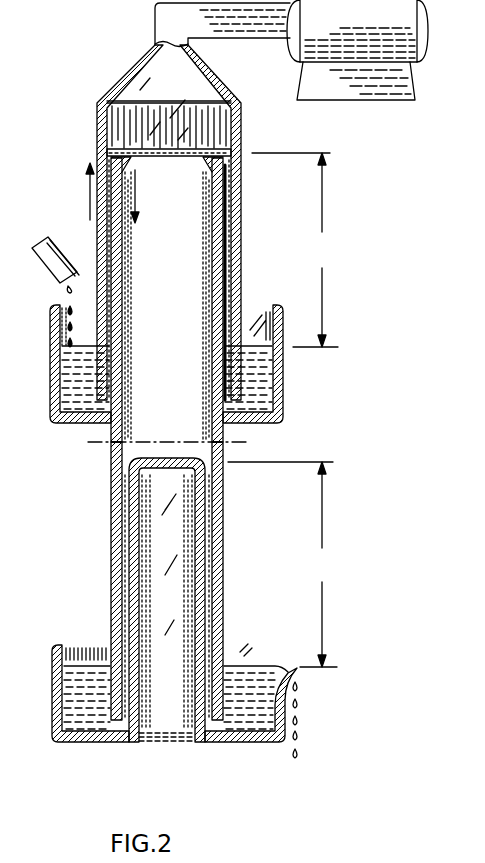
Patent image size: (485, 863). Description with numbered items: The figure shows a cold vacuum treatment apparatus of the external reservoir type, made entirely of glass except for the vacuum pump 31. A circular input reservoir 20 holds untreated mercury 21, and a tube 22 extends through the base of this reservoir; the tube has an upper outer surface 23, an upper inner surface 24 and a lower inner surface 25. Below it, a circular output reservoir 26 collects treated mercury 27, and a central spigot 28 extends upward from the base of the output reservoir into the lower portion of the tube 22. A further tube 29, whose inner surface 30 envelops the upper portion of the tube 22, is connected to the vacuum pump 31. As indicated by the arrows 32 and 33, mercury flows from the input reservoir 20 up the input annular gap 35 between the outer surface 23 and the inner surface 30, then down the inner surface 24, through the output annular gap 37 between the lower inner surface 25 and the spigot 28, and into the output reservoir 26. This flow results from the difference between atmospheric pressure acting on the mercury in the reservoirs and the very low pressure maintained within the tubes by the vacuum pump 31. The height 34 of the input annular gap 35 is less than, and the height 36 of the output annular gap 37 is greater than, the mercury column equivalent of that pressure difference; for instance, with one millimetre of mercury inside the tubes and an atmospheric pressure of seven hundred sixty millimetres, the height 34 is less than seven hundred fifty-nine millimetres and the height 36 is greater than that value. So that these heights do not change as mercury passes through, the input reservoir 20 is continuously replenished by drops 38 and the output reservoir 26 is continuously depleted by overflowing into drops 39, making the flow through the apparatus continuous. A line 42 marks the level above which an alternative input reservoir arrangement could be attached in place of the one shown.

The circular input reservoir 20 is at (52, 362).
The untreated mercury 21 is at (70, 403).
The tube 22 is at (111, 548).
The upper outer surface 23 is at (240, 219).
The upper inner surface 24 is at (214, 292).
The lower inner surface 25 is at (208, 529).
The circular output reservoir 26 is at (53, 688).
The treated mercury 27 is at (77, 715).
The central spigot 28 is at (140, 676).
The tube 29 is at (243, 113).
The inner surface 30 is at (231, 186).
The vacuum pump 31 is at (428, 34).
The arrow 32 is at (90, 197).
The arrow 33 is at (137, 192).
The height of input annular gap 34 is at (295, 250).
The input annular gap 35 is at (228, 290).
The height of output annular gap 36 is at (283, 564).
The output annular gap 37 is at (212, 621).
The drops 38 is at (70, 299).
The drops 39 is at (300, 724).
The line 42 is at (246, 442).